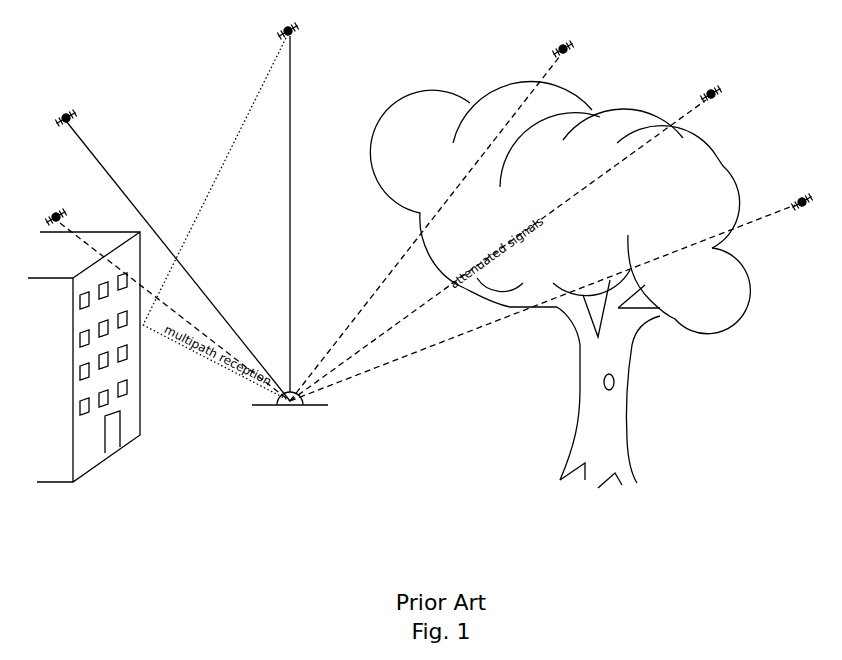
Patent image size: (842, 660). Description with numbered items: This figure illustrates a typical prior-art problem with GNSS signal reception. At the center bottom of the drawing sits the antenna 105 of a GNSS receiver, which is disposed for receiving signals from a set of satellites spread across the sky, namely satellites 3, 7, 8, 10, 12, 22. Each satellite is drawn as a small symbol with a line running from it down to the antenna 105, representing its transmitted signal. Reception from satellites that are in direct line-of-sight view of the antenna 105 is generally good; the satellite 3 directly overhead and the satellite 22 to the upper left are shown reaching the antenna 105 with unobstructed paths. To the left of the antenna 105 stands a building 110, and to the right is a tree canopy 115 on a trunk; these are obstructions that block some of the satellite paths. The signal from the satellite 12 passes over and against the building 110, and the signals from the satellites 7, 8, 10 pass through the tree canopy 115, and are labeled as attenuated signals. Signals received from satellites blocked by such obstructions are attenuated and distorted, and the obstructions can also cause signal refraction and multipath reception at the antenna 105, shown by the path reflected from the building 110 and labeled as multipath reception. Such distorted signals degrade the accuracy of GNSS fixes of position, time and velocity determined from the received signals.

The satellite 3 is at (287, 26).
The satellite 7 is at (562, 43).
The satellite 8 is at (710, 89).
The satellite 10 is at (800, 198).
The satellite 12 is at (53, 212).
The satellite 22 is at (63, 111).
The antenna 105 is at (339, 422).
The building 110 is at (72, 357).
The tree canopy 115 is at (560, 285).